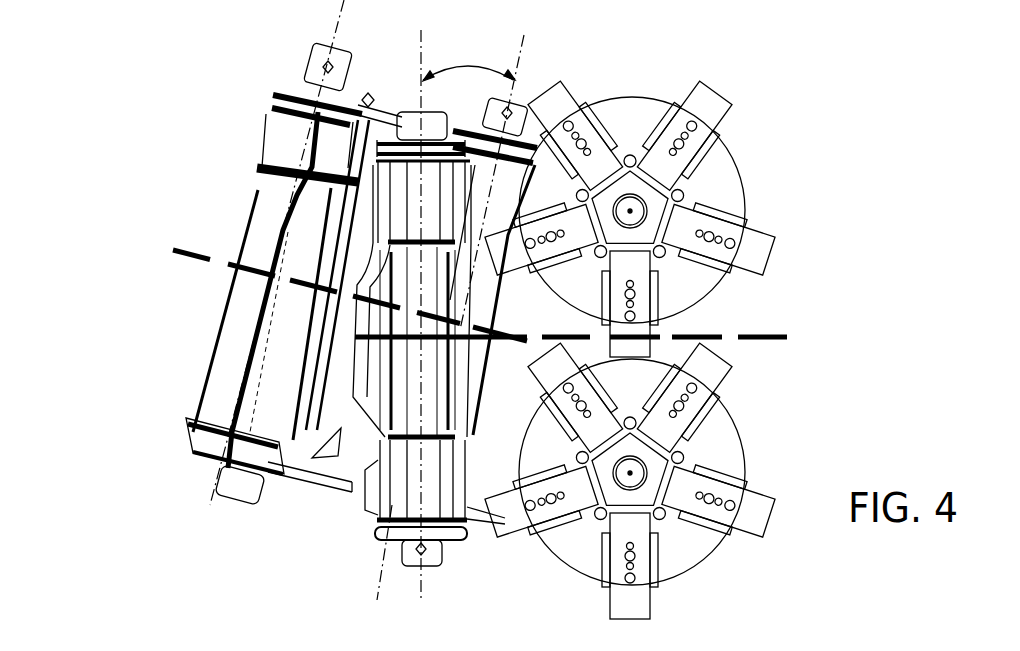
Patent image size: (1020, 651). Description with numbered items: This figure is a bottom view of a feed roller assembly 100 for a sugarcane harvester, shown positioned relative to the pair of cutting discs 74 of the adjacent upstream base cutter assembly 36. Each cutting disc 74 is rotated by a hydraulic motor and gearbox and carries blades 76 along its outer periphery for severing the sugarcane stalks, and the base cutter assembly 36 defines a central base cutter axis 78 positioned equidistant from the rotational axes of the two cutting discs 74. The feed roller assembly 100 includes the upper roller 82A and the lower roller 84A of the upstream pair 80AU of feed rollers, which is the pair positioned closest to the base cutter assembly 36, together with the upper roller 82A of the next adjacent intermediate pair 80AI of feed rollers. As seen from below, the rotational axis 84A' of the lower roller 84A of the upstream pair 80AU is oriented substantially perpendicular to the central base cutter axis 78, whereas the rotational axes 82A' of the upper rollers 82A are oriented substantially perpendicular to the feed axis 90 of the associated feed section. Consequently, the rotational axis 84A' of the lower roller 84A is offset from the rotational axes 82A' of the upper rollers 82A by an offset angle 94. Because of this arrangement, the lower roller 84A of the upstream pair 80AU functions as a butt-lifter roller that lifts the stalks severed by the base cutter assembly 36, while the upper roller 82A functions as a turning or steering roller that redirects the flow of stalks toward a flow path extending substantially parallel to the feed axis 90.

The feed roller assembly 100 is at (160, 157).
The first base cutter assembly 36 is at (763, 210).
The cutting disc 74 is at (630, 108).
The blade 76 is at (700, 97).
The first central base cutter axis 78 is at (765, 345).
The intermediate pair of feed rollers 80AI is at (173, 451).
The upstream pair of feed rollers 80AU is at (365, 527).
The upper roller 82A is at (337, 290).
The rotational axis of the upper roller 82A' is at (313, 300).
The lower roller 84A is at (418, 81).
The rotational axis of the lower roller 84A' is at (463, 323).
The feed axis 90 is at (198, 266).
The offset angle 94 is at (465, 65).